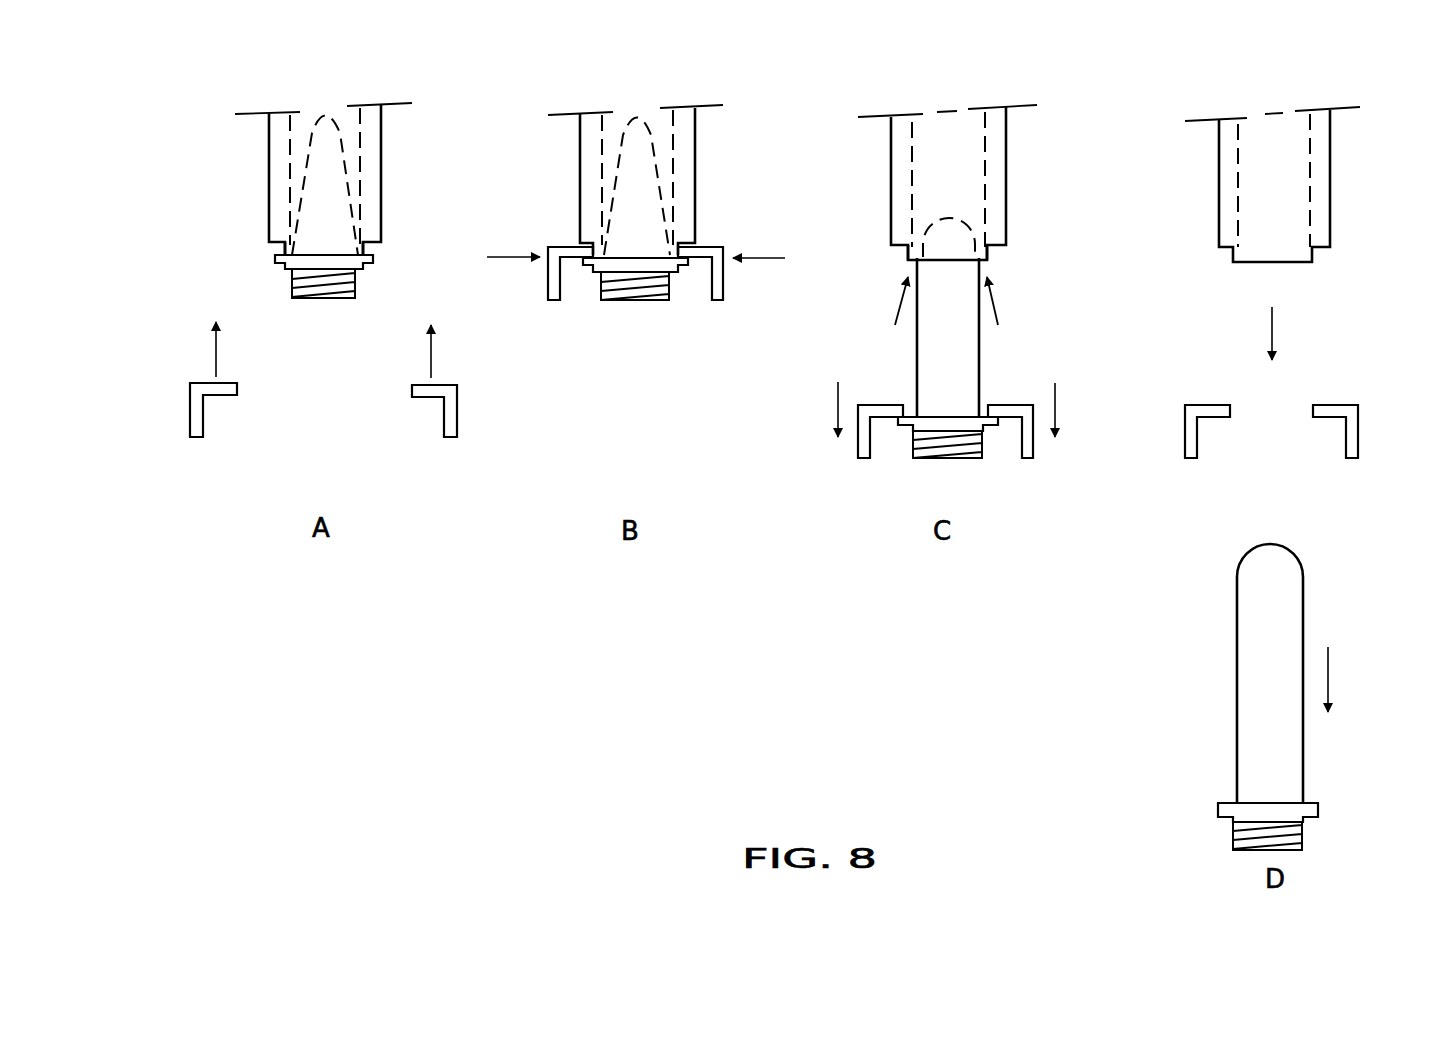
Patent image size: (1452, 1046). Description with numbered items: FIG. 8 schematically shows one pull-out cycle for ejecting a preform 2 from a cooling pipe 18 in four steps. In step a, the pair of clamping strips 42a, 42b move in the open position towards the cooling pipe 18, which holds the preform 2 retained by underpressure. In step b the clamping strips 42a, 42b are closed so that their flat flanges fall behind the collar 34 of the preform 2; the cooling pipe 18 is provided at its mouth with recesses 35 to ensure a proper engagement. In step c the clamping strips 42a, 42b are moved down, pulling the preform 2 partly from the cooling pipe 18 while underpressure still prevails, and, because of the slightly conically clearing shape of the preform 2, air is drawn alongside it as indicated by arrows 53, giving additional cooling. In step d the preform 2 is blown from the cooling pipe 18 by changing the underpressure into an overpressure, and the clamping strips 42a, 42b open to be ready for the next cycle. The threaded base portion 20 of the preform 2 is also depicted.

The cooling pipe 18 is at (368, 147).
The preform 2 is at (320, 170).
The recess 35 is at (284, 249).
The collar 34 is at (367, 267).
The threaded base 20 is at (323, 297).
The clamping strip 42b is at (197, 407).
The clamping strip 42a is at (453, 417).
The arrows 53 is at (893, 315).